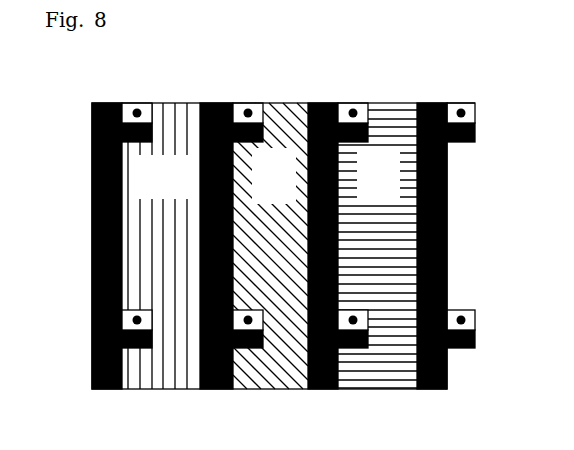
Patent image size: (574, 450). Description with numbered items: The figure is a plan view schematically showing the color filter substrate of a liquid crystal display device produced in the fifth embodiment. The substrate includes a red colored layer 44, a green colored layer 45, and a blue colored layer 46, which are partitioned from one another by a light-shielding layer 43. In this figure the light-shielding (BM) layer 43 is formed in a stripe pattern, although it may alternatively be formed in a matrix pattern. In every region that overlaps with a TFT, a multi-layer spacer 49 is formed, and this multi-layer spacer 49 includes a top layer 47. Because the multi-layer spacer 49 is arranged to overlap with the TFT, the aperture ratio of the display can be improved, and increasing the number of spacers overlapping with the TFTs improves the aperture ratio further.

The light-shielding layer 43 is at (427, 103).
The red colored layer 44 is at (167, 377).
The green colored layer 45 is at (277, 378).
The blue colored layer 46 is at (380, 378).
The top layer 47 is at (363, 309).
The multi-layer spacer 49 is at (368, 328).